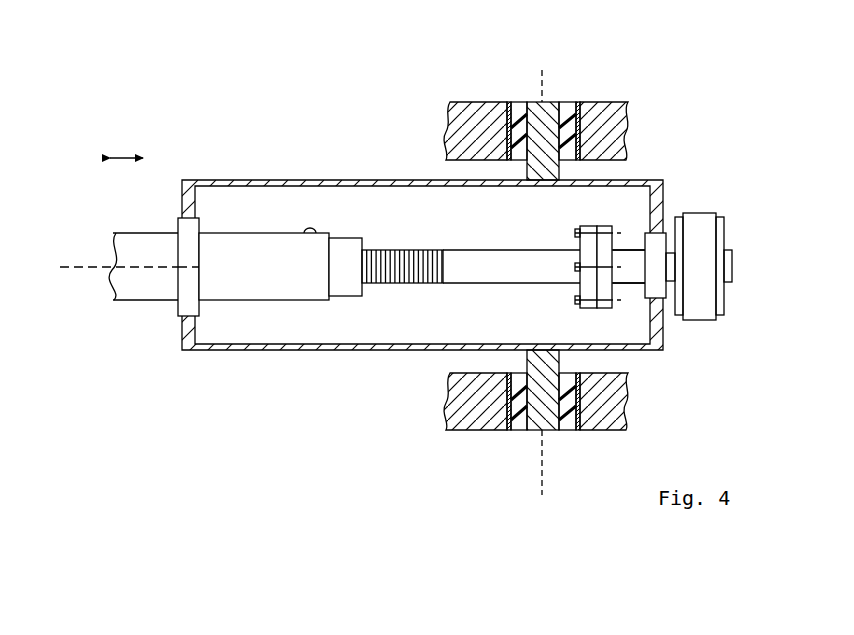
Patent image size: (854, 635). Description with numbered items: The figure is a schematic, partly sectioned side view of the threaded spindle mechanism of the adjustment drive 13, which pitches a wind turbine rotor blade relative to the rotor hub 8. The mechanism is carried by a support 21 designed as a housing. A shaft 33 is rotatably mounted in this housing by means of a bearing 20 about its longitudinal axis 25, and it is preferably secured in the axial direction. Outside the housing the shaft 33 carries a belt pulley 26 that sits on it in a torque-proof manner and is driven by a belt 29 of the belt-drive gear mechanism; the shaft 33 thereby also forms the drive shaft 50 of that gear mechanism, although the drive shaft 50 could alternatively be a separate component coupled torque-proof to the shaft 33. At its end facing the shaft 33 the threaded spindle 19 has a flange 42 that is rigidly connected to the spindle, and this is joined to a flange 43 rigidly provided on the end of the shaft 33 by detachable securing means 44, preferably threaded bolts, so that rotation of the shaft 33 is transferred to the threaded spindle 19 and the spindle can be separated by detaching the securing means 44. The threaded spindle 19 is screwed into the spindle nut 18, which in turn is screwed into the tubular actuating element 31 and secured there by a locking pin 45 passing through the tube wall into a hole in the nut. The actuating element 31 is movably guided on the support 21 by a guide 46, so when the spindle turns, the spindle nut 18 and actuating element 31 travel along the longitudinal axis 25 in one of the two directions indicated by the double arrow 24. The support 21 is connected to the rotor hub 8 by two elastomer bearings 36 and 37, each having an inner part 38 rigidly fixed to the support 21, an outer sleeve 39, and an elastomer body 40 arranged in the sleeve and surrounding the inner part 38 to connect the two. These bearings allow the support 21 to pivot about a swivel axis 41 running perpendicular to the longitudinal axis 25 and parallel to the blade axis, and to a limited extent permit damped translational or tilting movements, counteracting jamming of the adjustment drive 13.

The rotor hub 8 is at (452, 107).
The adjustment drive 13 is at (325, 65).
The spindle nut 18 is at (346, 238).
The threaded spindle 19 is at (460, 280).
The bearing 20 is at (658, 300).
The support 21 is at (226, 183).
The double arrow 24 is at (128, 158).
The longitudinal axis 25 is at (70, 267).
The belt pulley 26 is at (722, 310).
The belt 29 is at (700, 213).
The actuating element 31 is at (115, 290).
The shaft 33 is at (632, 258).
The elastomer bearing 36 is at (520, 460).
The elastomer bearing 37 is at (553, 82).
The inner part 38 is at (533, 107).
The outer sleeve 39 is at (578, 103).
The elastomer body 40 is at (515, 107).
The swivel axis 41 is at (542, 480).
The flange 42 is at (582, 226).
The flange 43 is at (606, 232).
The securing means 44 is at (575, 230).
The locking pin 45 is at (312, 232).
The guide 46 is at (178, 305).
The drive shaft 50 is at (732, 268).